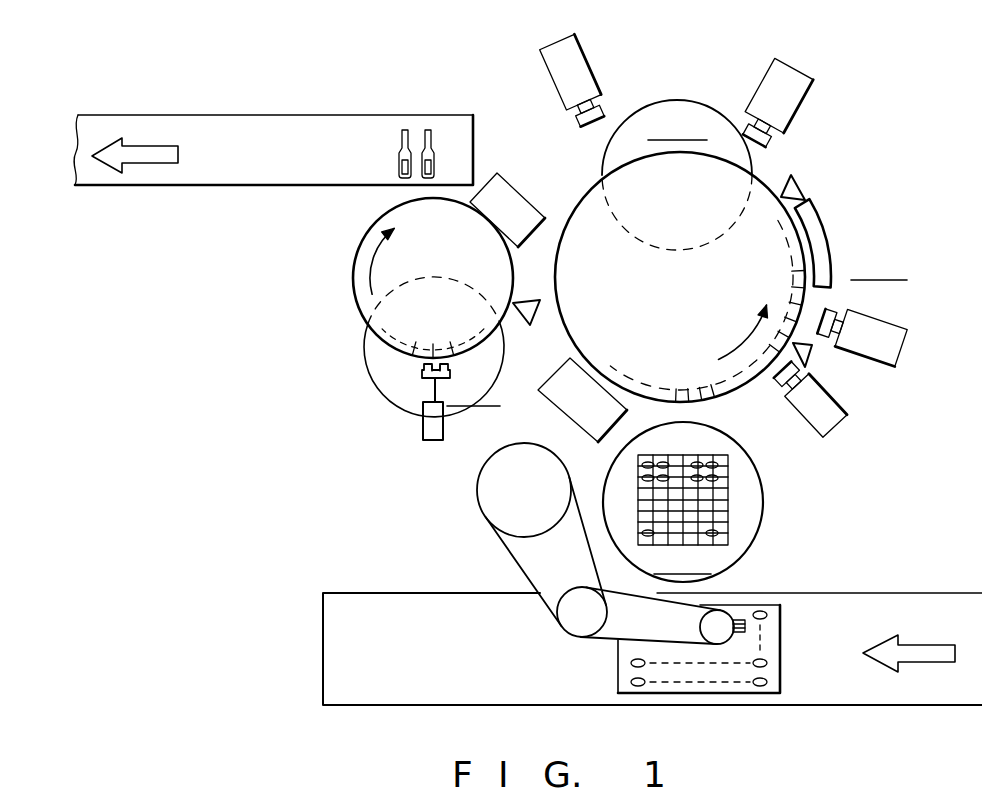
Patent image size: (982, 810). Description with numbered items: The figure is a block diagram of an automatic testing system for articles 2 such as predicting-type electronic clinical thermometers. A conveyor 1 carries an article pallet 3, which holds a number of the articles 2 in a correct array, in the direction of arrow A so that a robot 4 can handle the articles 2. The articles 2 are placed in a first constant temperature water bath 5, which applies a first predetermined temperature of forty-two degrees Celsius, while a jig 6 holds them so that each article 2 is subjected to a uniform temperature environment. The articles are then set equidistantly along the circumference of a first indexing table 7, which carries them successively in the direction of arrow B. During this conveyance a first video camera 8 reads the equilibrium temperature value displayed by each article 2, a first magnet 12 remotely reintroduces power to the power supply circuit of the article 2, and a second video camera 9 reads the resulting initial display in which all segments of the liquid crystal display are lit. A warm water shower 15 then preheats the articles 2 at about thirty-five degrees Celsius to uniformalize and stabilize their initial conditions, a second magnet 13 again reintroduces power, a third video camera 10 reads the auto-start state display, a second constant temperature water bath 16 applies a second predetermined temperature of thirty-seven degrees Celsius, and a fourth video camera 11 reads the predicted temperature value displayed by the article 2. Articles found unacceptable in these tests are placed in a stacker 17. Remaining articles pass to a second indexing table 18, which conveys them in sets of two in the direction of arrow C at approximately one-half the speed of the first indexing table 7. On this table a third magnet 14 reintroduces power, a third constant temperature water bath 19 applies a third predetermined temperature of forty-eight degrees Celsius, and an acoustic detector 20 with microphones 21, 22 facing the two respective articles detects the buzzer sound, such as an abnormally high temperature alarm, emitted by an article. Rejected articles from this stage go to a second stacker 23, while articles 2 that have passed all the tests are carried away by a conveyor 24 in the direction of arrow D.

The conveyor 1 is at (652, 623).
The article 2 is at (428, 128).
The article pallet 3 is at (781, 640).
The robot 4 is at (478, 490).
The first constant temperature water bath 5 is at (760, 510).
The jig 6 is at (728, 541).
The first indexing table 7 is at (680, 296).
The first video camera 8 is at (847, 422).
The second video camera 9 is at (906, 350).
The third video camera 10 is at (814, 100).
The fourth video camera 11 is at (596, 75).
The first magnet 12 is at (812, 357).
The second magnet 13 is at (800, 186).
The third magnet 14 is at (528, 300).
The warm water shower 15 is at (832, 242).
The second constant temperature water bath 16 is at (692, 105).
The stacker 17 is at (548, 400).
The second indexing table 18 is at (403, 278).
The third constant temperature water bath 19 is at (380, 395).
The acoustic detector 20 is at (423, 432).
The microphone 21 is at (421, 371).
The microphone 22 is at (452, 372).
The second stacker 23 is at (522, 190).
The conveyor 24 is at (273, 123).